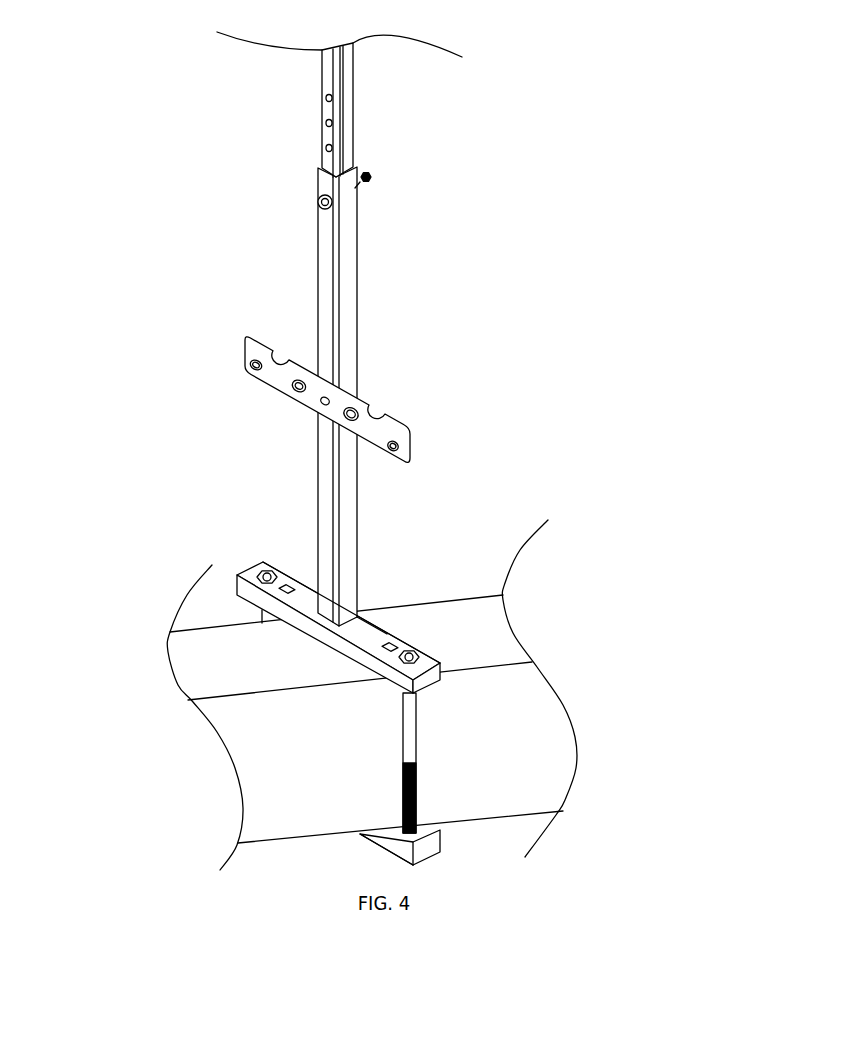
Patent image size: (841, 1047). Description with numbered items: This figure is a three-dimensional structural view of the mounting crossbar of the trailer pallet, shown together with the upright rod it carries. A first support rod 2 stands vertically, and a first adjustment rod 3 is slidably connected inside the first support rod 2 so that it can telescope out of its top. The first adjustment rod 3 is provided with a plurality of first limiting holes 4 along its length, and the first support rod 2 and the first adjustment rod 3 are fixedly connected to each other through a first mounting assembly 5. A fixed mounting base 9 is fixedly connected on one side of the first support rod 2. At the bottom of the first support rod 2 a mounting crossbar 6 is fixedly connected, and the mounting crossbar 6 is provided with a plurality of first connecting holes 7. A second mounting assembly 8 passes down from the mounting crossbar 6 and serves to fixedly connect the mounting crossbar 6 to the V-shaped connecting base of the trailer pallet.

The first support rod 2 is at (345, 343).
The first adjustment rod 3 is at (330, 70).
The first limiting holes 4 is at (336, 122).
The first mounting assembly 5 is at (318, 201).
The mounting crossbar 6 is at (368, 635).
The first connecting holes 7 is at (256, 607).
The second mounting assembly 8 is at (407, 732).
The fixed mounting base 9 is at (282, 378).